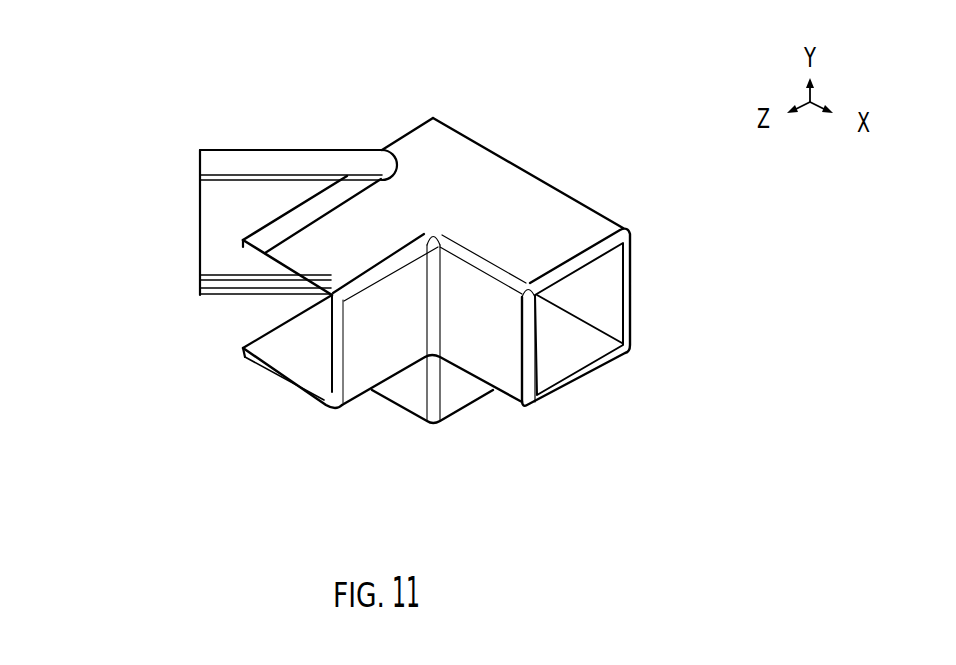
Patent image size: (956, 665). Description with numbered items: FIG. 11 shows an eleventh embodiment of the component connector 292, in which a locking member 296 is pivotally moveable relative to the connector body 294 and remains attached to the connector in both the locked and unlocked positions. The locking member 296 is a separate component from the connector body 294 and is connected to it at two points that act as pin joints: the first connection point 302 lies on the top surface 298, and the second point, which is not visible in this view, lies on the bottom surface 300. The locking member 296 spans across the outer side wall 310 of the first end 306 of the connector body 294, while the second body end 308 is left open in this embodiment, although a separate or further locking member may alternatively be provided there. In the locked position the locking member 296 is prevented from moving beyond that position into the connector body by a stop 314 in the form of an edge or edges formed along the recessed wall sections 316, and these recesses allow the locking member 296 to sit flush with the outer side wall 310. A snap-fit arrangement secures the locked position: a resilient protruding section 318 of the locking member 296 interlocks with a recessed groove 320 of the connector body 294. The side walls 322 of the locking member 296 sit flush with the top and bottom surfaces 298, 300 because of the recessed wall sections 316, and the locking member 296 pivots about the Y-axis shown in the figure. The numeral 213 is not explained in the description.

The component connector 292 is at (582, 86).
The connector body 294 is at (433, 383).
The locking member 296 is at (208, 160).
The top surface 298 is at (437, 170).
The bottom surface 300 is at (360, 398).
The first connection point 302 is at (378, 164).
The first end 306 is at (290, 356).
The second body end 308 is at (567, 357).
The outer side wall 310 is at (420, 116).
The stop 314 is at (262, 353).
The recessed wall sections 316 is at (279, 222).
The resilient protruding section 318 is at (217, 276).
The recessed groove 320 is at (253, 360).
The side walls 322 is at (217, 215).
The front top edge 213 is at (300, 313).